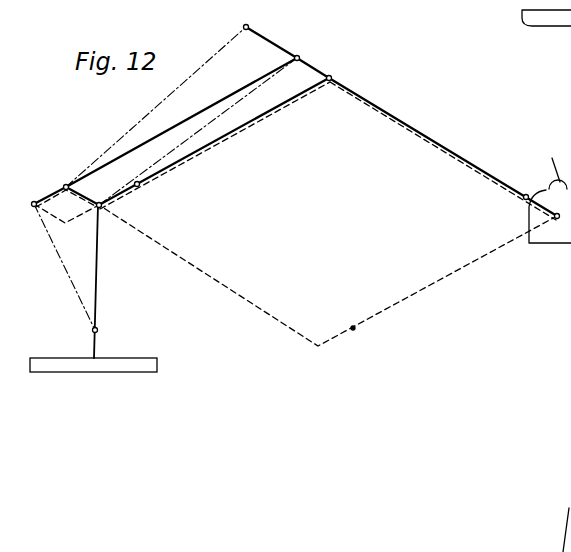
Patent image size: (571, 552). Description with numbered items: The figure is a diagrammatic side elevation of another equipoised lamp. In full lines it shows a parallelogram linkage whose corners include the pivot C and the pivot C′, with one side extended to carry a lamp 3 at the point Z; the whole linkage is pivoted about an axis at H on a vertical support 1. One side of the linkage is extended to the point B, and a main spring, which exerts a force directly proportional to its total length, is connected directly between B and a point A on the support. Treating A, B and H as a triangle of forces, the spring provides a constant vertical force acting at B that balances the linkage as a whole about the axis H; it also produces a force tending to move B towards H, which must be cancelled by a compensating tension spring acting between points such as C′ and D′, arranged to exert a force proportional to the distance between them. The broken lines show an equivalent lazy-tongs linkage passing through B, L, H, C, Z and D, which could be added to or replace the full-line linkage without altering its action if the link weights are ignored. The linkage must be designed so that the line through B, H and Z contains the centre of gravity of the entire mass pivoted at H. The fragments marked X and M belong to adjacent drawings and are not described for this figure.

The vertical support 1 is at (97, 310).
The spring anchor point A is at (93, 330).
The spring connection point B is at (34, 207).
The lazy-tongs linkage point L is at (65, 235).
The pivot axis H is at (99, 208).
The parallelogram linkage pivot D′ is at (137, 187).
The lazy-tongs linkage point D is at (317, 356).
The parallelogram linkage pivot C′ is at (300, 57).
The parallelogram linkage pivot C is at (332, 77).
The lamp position Z is at (559, 230).
The lamp 3 is at (545, 228).
The part X is at (546, 32).
The part M is at (556, 530).